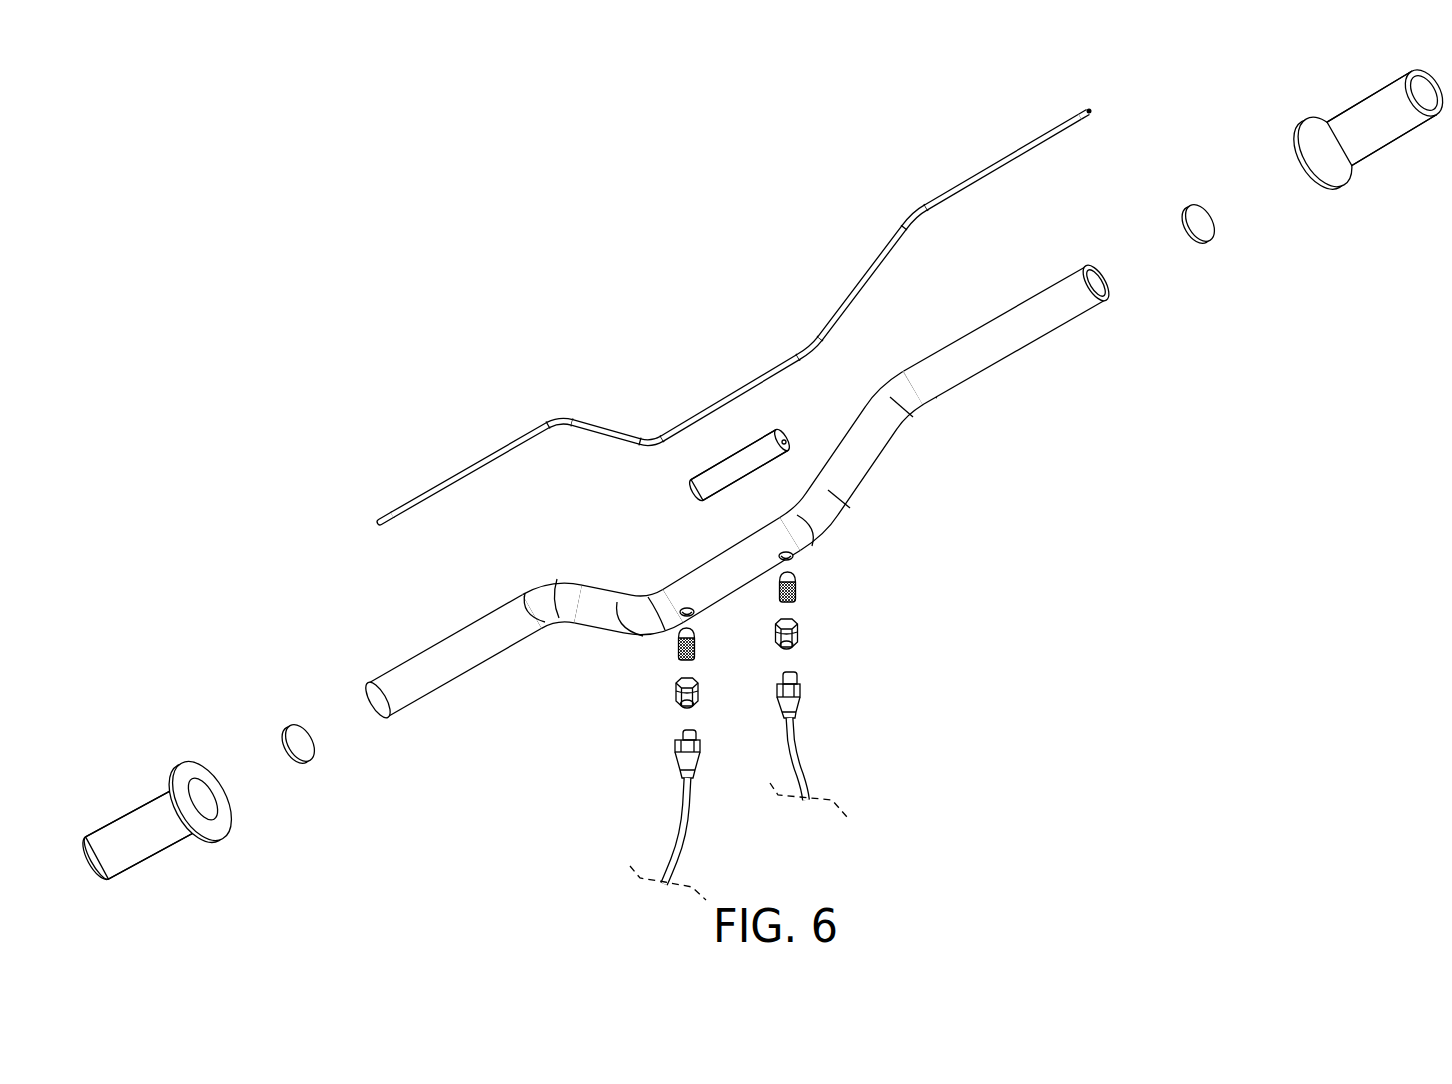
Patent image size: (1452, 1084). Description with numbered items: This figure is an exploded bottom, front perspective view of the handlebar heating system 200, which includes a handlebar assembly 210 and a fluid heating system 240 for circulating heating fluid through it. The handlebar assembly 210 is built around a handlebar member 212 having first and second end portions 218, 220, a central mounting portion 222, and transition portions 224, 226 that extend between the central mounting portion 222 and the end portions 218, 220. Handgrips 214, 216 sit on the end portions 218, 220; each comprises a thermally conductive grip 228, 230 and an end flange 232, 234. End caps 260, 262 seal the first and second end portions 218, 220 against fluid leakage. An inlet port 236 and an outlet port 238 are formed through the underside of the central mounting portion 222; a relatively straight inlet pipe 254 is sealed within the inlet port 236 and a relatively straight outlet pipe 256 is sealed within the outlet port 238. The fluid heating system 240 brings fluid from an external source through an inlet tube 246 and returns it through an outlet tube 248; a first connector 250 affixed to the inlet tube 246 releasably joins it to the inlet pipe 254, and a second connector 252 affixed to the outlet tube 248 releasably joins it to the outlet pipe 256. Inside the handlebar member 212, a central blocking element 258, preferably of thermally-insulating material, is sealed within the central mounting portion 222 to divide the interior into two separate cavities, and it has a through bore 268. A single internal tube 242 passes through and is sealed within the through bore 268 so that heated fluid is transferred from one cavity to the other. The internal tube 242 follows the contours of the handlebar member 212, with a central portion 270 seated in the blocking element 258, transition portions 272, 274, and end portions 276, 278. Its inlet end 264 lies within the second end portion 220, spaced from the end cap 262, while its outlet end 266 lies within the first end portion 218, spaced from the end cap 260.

The handlebar heating system 200 is at (466, 346).
The handlebar assembly 210 is at (428, 584).
The handlebar member 212 is at (547, 574).
The handgrip 214 is at (216, 670).
The handgrip 216 is at (1200, 102).
The first end portion 218 is at (450, 673).
The second end portion 220 is at (1012, 347).
The central mounting portion 222 is at (705, 576).
The transition portion 224 is at (589, 620).
The transition portion 226 is at (890, 450).
The thermally conductive grip 228 is at (140, 858).
The thermally conductive grip 230 is at (1363, 147).
The end flange 232 is at (228, 815).
The end flange 234 is at (1303, 112).
The inlet port 236 is at (785, 551).
The outlet port 238 is at (684, 606).
The fluid heating system 240 is at (598, 797).
The internal tube 242 is at (731, 389).
The inlet tube 246 is at (803, 760).
The outlet tube 248 is at (683, 846).
The first connector 250 is at (798, 640).
The second connector 252 is at (701, 696).
The inlet pipe 254 is at (797, 588).
The outlet pipe 256 is at (696, 641).
The central blocking element 258 is at (737, 456).
The end cap 260 is at (292, 730).
The end cap 262 is at (1206, 222).
The inlet end 264 is at (1092, 113).
The outlet end 266 is at (378, 522).
The through bore 268 is at (789, 436).
The central portion 270 is at (758, 378).
The transition portion 272 is at (878, 266).
The transition portion 274 is at (601, 426).
The end portion 276 is at (974, 177).
The end portion 278 is at (481, 456).